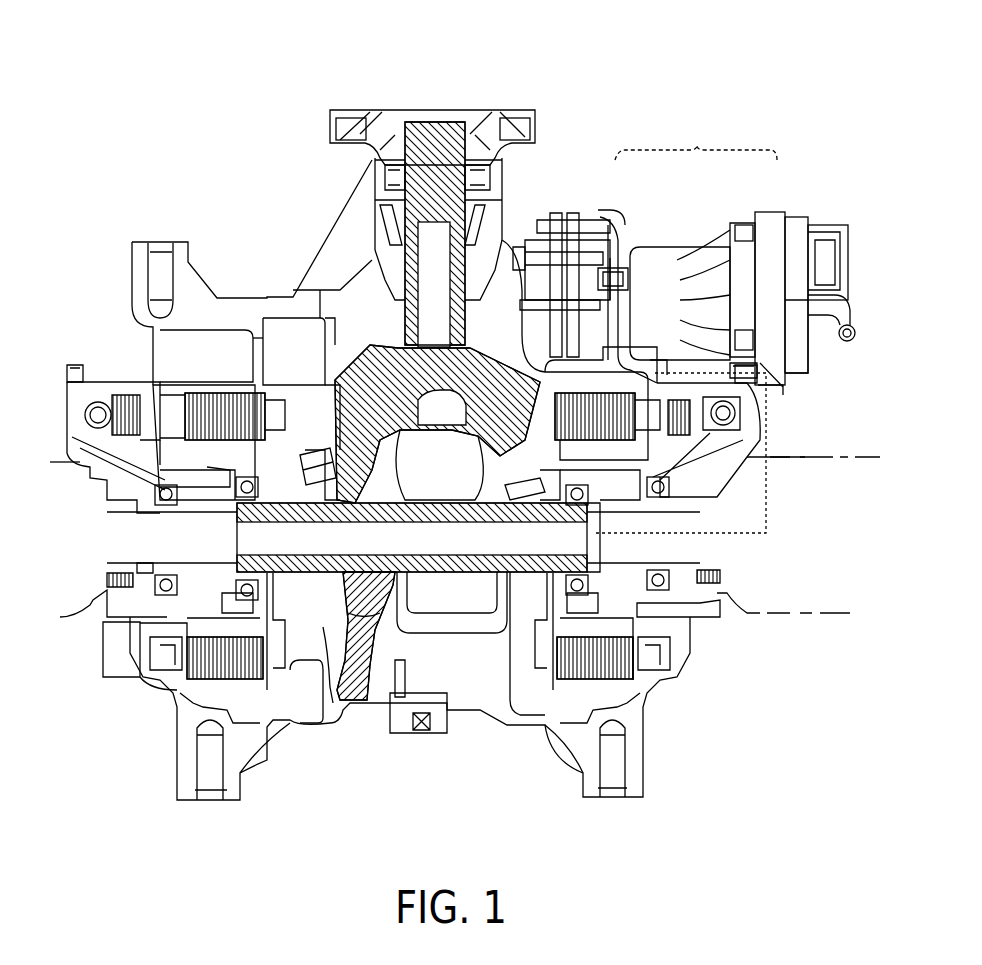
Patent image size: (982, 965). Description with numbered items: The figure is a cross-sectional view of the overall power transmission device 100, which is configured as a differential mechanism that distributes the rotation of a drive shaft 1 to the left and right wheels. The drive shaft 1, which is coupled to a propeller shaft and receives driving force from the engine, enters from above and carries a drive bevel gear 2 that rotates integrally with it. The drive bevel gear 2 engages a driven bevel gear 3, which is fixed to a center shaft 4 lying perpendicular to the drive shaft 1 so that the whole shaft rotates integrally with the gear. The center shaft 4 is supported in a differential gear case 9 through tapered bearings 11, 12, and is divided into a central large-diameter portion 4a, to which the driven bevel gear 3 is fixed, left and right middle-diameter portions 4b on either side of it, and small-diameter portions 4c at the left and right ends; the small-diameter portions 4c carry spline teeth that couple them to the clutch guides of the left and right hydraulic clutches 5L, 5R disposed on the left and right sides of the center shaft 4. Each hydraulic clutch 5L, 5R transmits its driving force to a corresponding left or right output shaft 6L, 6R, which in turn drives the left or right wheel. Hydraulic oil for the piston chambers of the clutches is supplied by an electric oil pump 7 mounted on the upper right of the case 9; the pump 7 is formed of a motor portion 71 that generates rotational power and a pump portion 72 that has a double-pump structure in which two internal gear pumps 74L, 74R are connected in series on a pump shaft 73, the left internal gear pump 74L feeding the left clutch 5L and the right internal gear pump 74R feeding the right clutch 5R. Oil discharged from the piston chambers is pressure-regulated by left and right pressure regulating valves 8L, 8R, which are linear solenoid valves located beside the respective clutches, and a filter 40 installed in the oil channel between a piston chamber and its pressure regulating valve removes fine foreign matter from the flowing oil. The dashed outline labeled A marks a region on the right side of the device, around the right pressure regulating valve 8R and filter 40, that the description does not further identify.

The power transmission device 100 is at (463, 26).
The drive shaft 1 is at (500, 212).
The drive bevel gear 2 is at (493, 400).
The driven bevel gear 3 is at (378, 420).
The center shaft 4 is at (420, 512).
The large-diameter portion 4a is at (369, 523).
The middle-diameter portions 4b is at (316, 525).
The small-diameter portions 4c is at (275, 524).
The left hydraulic clutch 5L is at (230, 388).
The right hydraulic clutch 5R is at (594, 380).
The left output shaft 6L is at (80, 617).
The right output shaft 6R is at (760, 613).
The electric oil pump 7 is at (696, 143).
The left pressure regulating valve 8L is at (103, 383).
The right pressure regulating valve 8R is at (737, 412).
The differential gear case 9 is at (318, 290).
The tapered bearing 11 is at (310, 450).
The tapered bearing 12 is at (500, 497).
The filter 40 is at (773, 457).
The motor portion 71 is at (736, 199).
The pump portion 72 is at (602, 201).
The pump shaft 73 is at (612, 272).
The left internal gear pump 74L is at (523, 235).
The right internal gear pump 74R is at (572, 233).
The region A is at (772, 507).